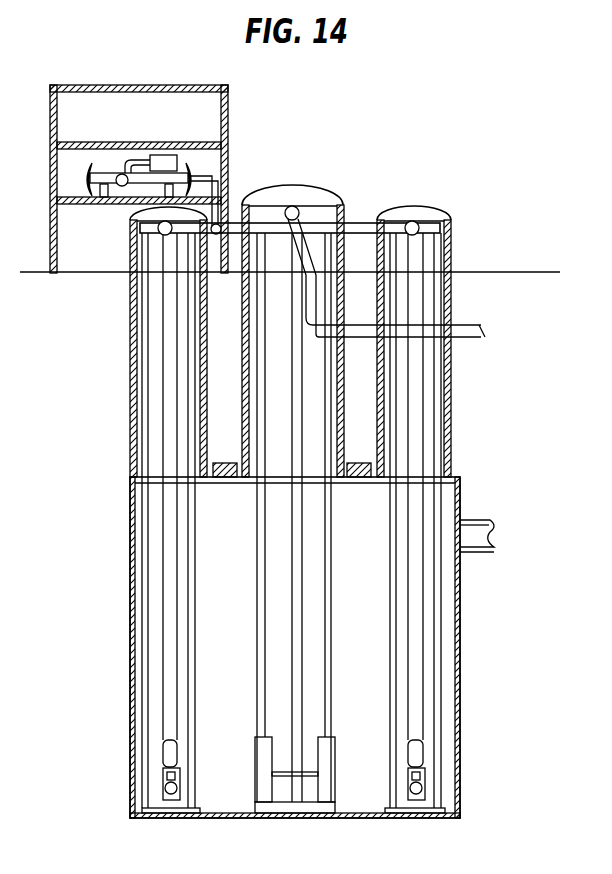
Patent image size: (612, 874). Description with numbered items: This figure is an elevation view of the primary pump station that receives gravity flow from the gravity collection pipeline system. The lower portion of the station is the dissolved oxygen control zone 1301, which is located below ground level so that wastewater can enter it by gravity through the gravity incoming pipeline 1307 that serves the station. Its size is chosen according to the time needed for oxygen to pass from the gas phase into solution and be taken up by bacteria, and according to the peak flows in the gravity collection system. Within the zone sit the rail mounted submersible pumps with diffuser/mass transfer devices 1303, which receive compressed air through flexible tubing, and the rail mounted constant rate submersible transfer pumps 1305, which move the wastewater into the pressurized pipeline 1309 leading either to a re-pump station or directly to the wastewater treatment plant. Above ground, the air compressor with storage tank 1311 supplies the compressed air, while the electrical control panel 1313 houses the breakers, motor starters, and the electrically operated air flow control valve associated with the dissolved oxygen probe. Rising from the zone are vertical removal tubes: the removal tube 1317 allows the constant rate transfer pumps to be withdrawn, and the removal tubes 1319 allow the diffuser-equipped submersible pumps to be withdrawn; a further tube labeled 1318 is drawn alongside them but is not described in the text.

The dissolved oxygen control zone 1301 is at (227, 578).
The rail mounted submersible pump with diffuser/mass transfer device 1303 is at (158, 753).
The rail mounted constant rate submersible transfer pump 1305 is at (253, 752).
The gravity incoming pipeline 1307 is at (471, 556).
The pressurized pipeline 1309 is at (468, 341).
The air compressor with storage tank 1311 is at (195, 167).
The electrical control panel 1313 is at (182, 113).
The removal tube for the rail mounted submersible constant rate transmission pumps 1317 is at (234, 323).
The left column 1318 is at (129, 430).
The removal tubes for the rail mounted submersible pumps with diffuser/mass transfer 1319 is at (456, 425).